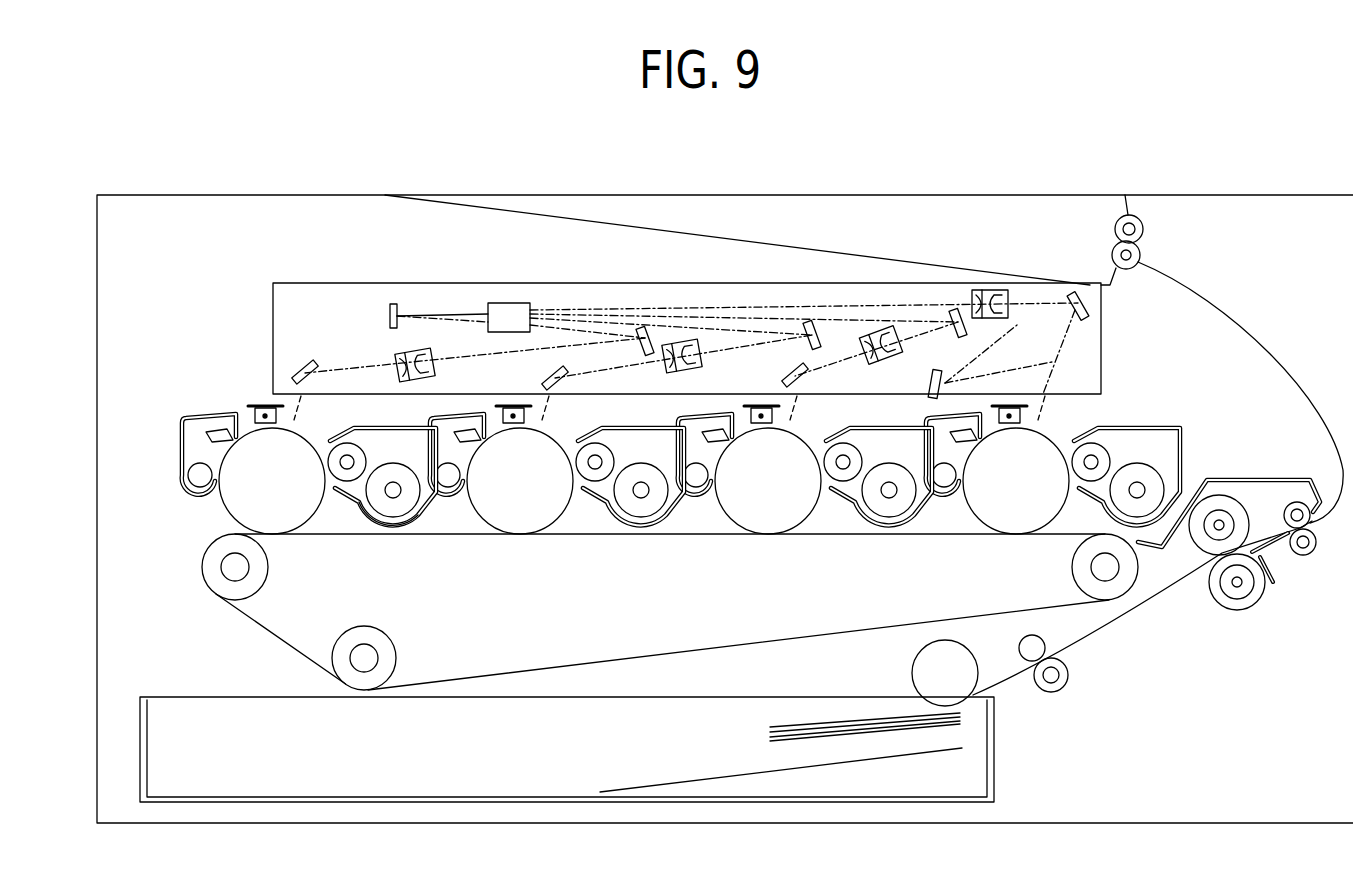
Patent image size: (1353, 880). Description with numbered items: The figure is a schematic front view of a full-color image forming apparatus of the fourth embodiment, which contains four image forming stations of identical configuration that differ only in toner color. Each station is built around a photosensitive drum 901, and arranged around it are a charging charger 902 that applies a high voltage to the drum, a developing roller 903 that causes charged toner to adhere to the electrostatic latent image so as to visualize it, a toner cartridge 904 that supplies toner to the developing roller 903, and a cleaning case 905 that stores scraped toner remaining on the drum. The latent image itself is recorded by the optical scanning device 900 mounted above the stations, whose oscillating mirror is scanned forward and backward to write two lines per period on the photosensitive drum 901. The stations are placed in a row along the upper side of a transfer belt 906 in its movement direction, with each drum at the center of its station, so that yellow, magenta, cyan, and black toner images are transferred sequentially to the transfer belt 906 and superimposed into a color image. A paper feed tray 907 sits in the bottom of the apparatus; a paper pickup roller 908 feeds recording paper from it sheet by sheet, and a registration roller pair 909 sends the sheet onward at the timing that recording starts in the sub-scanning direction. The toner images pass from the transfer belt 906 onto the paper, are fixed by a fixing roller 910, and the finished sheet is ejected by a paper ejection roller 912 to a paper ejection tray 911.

The optical scanning device 900 is at (352, 281).
The photosensitive drum 901 is at (230, 497).
The charging charger 902 is at (262, 404).
The developing roller 903 is at (328, 441).
The toner cartridge 904 is at (432, 501).
The cleaning case 905 is at (183, 438).
The transfer belt 906 is at (277, 638).
The paper feed tray 907 is at (160, 750).
The paper pickup roller 908 is at (918, 668).
The registration roller pair 909 is at (1062, 660).
The fixing roller 910 is at (1262, 600).
The paper ejection tray 911 is at (967, 218).
The paper ejection roller 912 is at (1143, 256).